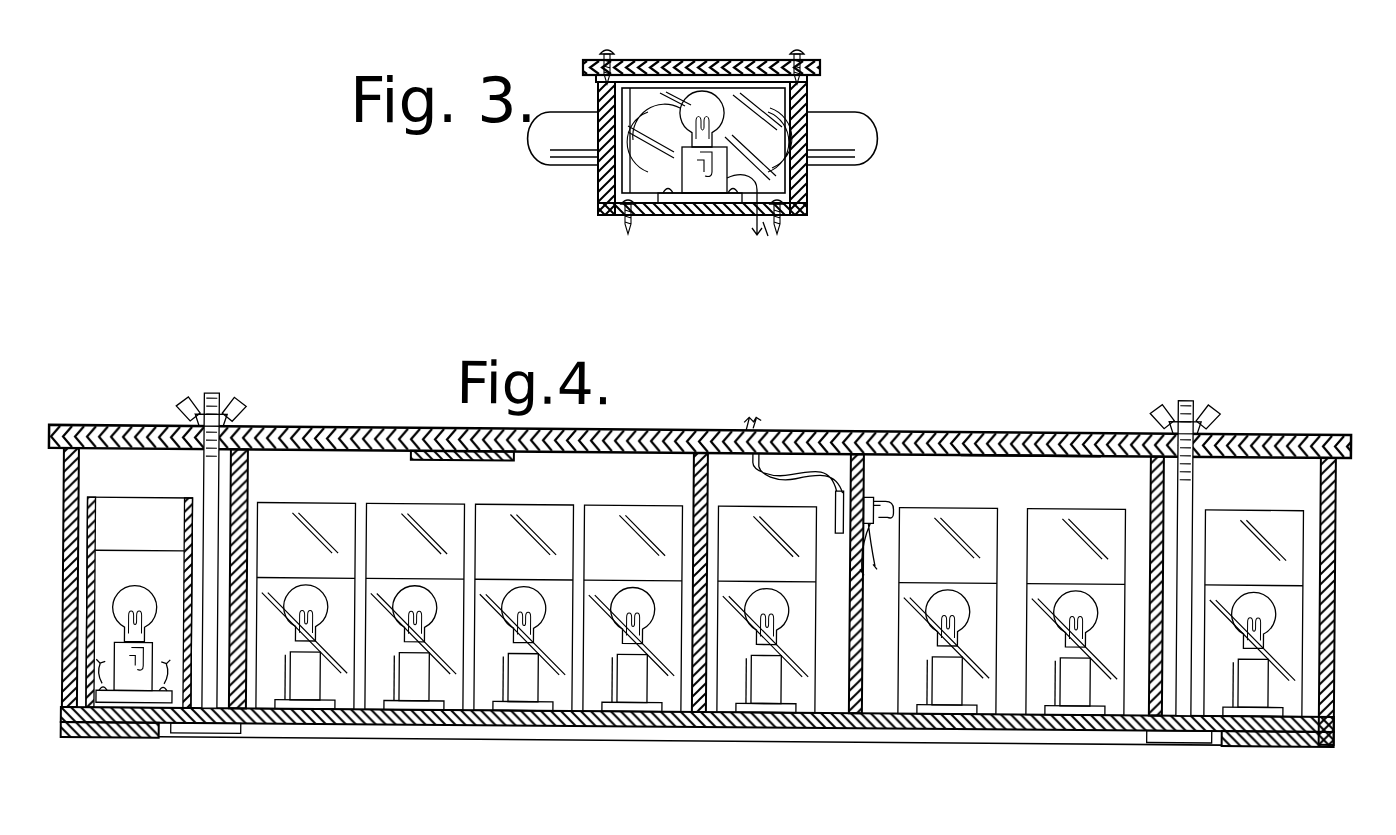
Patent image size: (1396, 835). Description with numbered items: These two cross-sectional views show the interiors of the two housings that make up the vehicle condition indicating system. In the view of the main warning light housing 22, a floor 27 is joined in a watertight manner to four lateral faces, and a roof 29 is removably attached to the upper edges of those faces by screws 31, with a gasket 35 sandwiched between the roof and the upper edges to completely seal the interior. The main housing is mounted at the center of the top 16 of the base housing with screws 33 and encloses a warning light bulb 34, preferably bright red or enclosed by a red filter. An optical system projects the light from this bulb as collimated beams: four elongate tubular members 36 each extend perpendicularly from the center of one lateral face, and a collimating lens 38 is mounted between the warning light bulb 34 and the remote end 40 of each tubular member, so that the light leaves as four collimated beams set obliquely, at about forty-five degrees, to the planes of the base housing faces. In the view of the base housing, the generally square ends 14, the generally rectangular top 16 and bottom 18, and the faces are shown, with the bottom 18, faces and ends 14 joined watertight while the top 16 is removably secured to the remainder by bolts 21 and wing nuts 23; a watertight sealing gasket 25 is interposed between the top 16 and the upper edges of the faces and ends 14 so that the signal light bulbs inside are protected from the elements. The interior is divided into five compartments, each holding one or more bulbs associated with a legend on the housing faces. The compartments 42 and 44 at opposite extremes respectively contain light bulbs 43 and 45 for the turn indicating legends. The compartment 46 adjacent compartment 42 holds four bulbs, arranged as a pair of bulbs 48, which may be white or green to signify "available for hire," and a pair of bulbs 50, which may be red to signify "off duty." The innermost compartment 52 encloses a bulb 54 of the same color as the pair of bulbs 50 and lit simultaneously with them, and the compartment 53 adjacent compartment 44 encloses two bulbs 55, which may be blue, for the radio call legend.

In FIG. 4, the ends 14 is at (63, 492).
In FIG. 4, the top 16 is at (119, 428).
In FIG. 4, the bottom 18 is at (125, 744).
In FIG. 4, the bolts 21 is at (214, 395).
In FIG. 3, the main warning light housing 22 is at (810, 90).
In FIG. 4, the wing nuts 23 is at (240, 408).
In FIG. 4, the watertight sealing gasket 25 is at (1020, 431).
In FIG. 3, the floor 27 is at (692, 216).
In FIG. 3, the roof 29 is at (660, 60).
In FIG. 3, the screws 31 is at (614, 56).
In FIG. 3, the screws 33 is at (622, 222).
In FIG. 3, the warning light bulb 34 is at (712, 96).
In FIG. 3, the gasket 35 is at (692, 76).
In FIG. 3, the elongate tubular members 36 is at (548, 168).
In FIG. 3, the collimating lens 38 is at (765, 95).
In FIG. 3, the remote end 40 is at (596, 112).
In FIG. 4, the compartment 42 is at (167, 578).
In FIG. 4, the light bulb 43 is at (131, 588).
In FIG. 4, the compartment 44 is at (1254, 592).
In FIG. 4, the light bulb 45 is at (1268, 600).
In FIG. 4, the compartment 46 is at (482, 581).
In FIG. 4, the pair of bulbs 48 is at (304, 590).
In FIG. 4, the pair of bulbs 50 is at (405, 590).
In FIG. 4, the innermost compartment 52 is at (805, 565).
In FIG. 4, the compartment 53 is at (1031, 585).
In FIG. 4, the bulb 54 is at (765, 592).
In FIG. 4, the bulbs 55 is at (955, 600).